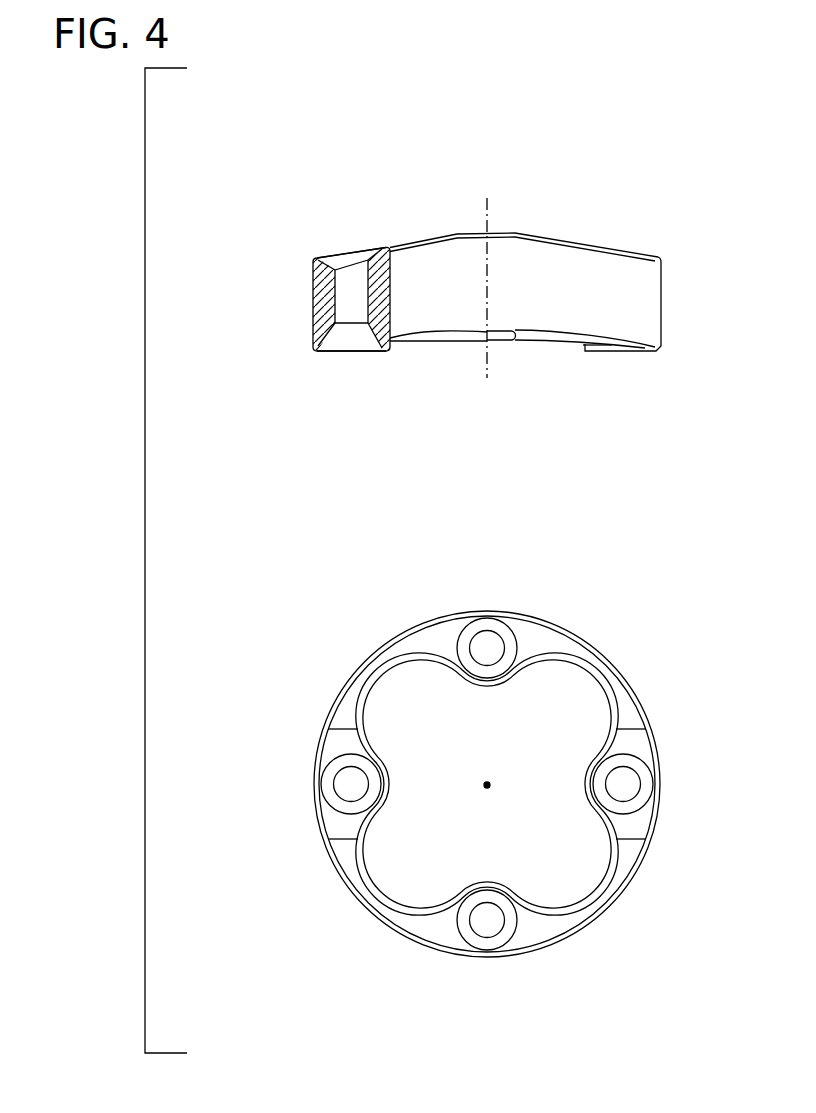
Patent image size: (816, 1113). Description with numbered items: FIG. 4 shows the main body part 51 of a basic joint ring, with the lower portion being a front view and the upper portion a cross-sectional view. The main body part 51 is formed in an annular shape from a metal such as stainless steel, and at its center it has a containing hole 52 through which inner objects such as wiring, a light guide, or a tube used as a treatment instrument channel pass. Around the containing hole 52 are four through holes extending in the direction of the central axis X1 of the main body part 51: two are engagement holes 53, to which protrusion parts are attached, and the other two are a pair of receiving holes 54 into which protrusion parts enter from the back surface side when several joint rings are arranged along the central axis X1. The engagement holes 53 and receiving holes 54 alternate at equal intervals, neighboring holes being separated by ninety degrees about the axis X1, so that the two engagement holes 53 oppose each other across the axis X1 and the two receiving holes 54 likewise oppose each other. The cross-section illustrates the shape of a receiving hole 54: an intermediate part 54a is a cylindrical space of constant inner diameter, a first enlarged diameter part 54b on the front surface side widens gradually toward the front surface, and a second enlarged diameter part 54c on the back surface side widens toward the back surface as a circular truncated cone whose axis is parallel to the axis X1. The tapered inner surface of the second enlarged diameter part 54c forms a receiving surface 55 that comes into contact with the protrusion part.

The main body part 51 is at (610, 198).
The containing hole 52 is at (425, 733).
The engagement hole 53 is at (488, 628).
The receiving hole 54 is at (366, 220).
The intermediate part 54a is at (340, 297).
The first enlarged diameter part 54b is at (345, 248).
The second enlarged diameter part 54c is at (363, 360).
The receiving surface 55 is at (338, 350).
The central axis X1 is at (487, 785).